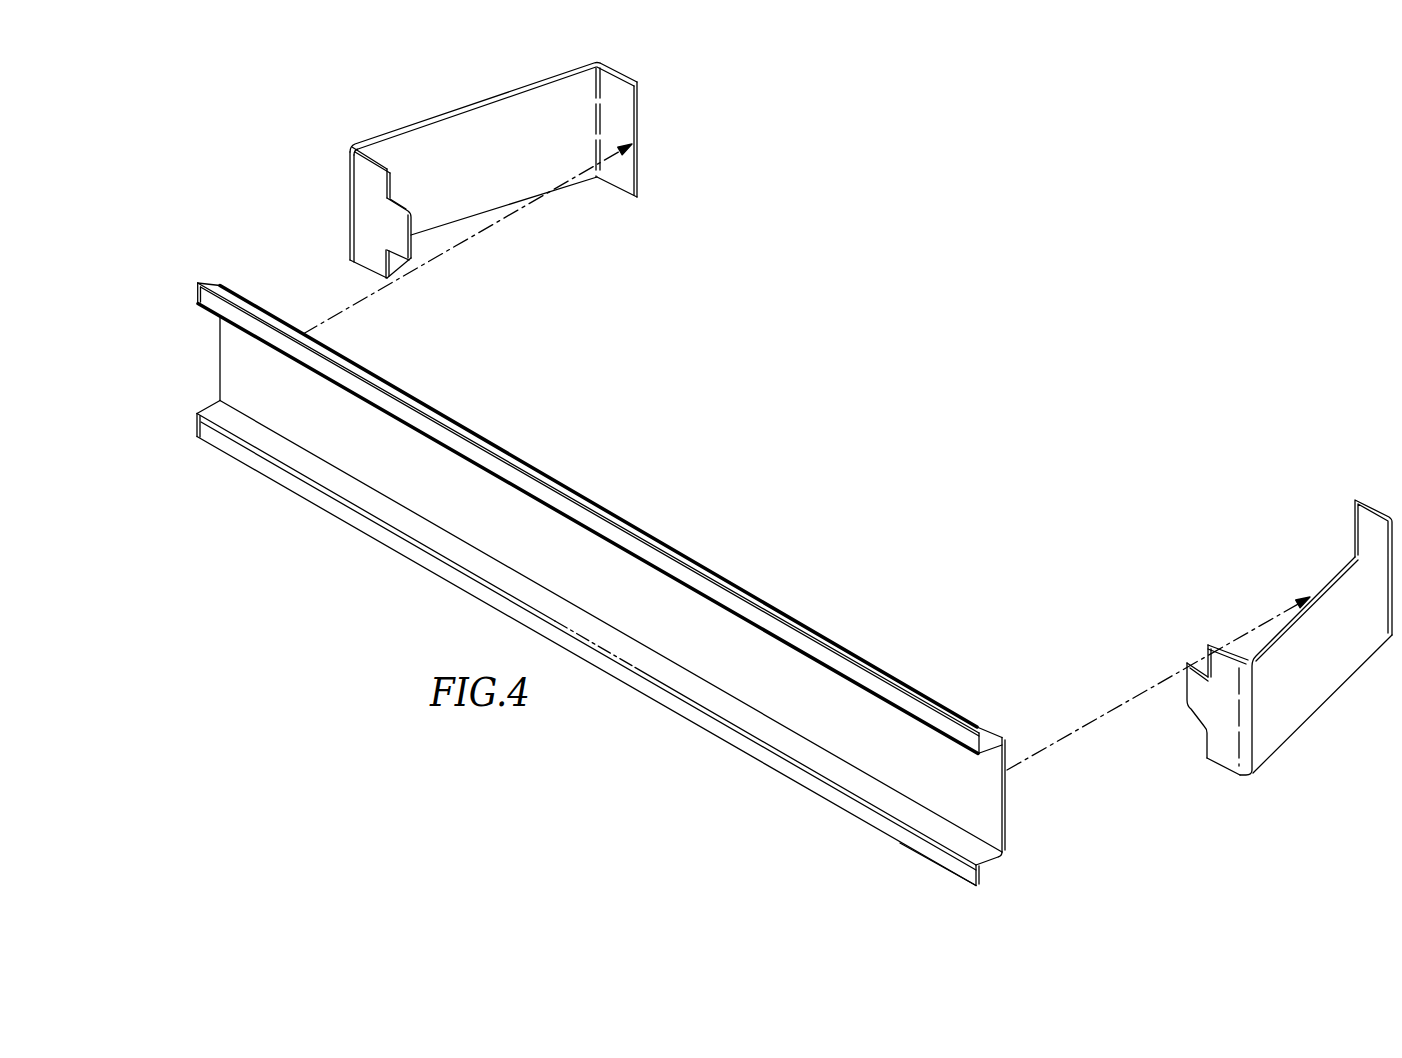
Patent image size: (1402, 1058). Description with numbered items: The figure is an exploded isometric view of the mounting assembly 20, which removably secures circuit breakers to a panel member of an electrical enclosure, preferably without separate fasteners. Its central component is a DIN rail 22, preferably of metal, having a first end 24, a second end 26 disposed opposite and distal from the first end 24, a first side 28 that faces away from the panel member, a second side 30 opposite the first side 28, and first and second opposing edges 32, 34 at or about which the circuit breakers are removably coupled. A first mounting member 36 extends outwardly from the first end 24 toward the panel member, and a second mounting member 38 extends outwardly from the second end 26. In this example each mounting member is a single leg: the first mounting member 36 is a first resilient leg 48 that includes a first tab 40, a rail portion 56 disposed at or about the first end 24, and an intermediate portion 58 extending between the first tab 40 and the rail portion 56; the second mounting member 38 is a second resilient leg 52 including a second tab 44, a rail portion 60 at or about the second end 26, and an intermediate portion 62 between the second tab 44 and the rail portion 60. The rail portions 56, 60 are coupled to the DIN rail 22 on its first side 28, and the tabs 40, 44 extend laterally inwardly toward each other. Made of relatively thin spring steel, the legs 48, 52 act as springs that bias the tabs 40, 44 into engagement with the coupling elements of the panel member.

The mounting assembly 20 is at (1101, 820).
The DIN rail 22 is at (671, 626).
The first end 24 is at (190, 459).
The second end 26 is at (949, 890).
The first side 28 is at (1008, 800).
The second side 30 is at (352, 460).
The first edge 32 is at (952, 713).
The second edge 34 is at (978, 887).
The first mounting member 36 is at (405, 105).
The second mounting member 38 is at (1319, 736).
The first tab 40 is at (398, 235).
The second tab 44 is at (1187, 693).
The first resilient leg 48 is at (378, 137).
The second resilient leg 52 is at (1278, 753).
The rail portion 56 is at (622, 95).
The intermediate portion 58 is at (490, 118).
The rail portion 60 is at (1370, 522).
The intermediate portion 62 is at (1350, 660).